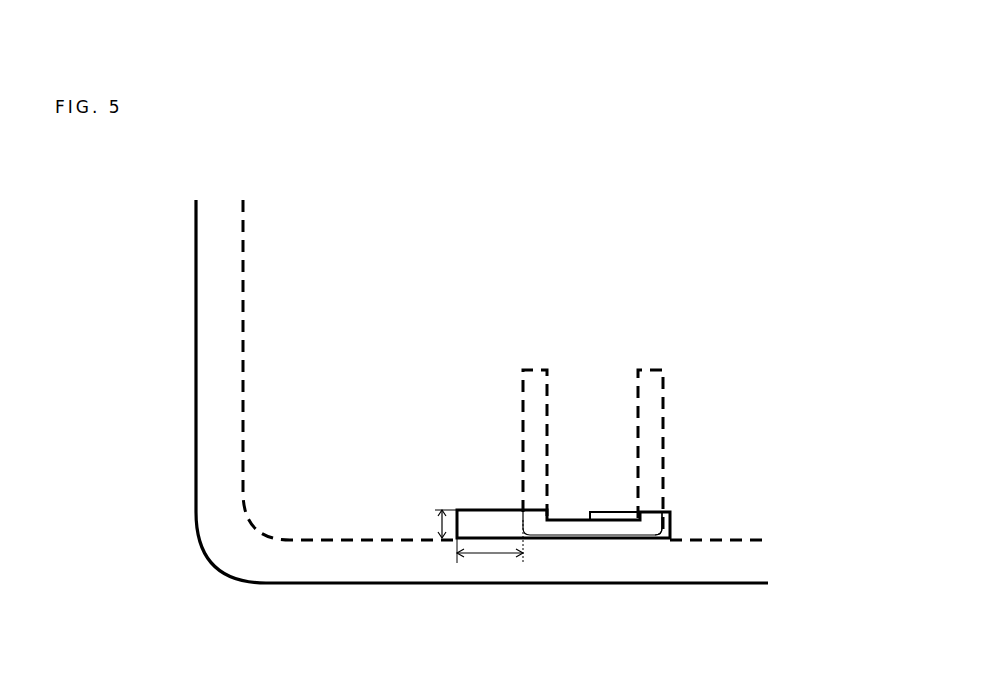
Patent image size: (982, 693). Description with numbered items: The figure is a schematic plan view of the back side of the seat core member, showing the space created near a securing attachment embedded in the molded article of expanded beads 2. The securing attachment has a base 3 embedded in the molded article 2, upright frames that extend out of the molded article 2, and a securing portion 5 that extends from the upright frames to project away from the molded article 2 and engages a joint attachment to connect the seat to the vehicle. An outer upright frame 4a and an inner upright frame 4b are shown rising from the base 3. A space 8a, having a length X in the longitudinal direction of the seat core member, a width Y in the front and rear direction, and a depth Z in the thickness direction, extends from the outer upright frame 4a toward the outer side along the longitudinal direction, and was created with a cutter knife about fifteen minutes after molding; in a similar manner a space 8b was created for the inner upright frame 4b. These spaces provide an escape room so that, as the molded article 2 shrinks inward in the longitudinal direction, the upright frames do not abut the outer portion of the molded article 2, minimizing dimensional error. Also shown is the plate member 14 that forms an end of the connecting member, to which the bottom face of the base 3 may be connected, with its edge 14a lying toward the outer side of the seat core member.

The molded article of expanded beads 2 is at (728, 569).
The base 3 is at (656, 488).
The outer upright frame 4a is at (522, 522).
The inner upright frame 4b is at (662, 522).
The securing portion 5 is at (567, 527).
The space 8a is at (473, 528).
The space 8b is at (613, 513).
The plate member 14 is at (300, 415).
The edge 14a is at (243, 397).